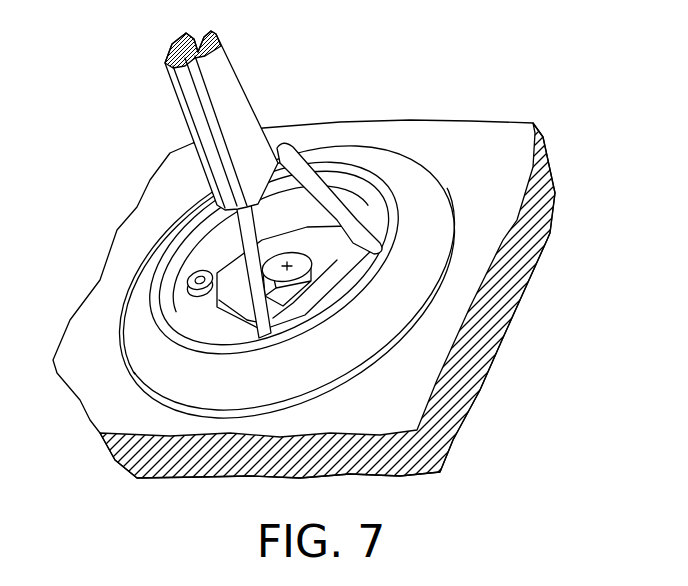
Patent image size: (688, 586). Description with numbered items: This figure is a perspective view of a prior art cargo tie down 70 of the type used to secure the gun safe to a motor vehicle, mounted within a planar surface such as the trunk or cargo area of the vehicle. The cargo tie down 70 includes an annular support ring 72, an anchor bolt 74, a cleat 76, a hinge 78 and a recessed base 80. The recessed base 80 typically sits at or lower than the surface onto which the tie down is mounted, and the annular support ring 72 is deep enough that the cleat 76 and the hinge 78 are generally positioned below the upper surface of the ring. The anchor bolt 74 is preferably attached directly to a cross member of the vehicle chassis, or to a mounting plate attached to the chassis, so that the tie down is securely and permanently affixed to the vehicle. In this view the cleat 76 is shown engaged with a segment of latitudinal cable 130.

The cargo tie down 70 is at (453, 145).
The annular support ring 72 is at (423, 213).
The anchor bolt 74 is at (250, 292).
The cleat 76 is at (300, 160).
The hinge 78 is at (353, 262).
The recessed base 80 is at (200, 320).
The latitudinal cable 130 is at (177, 90).